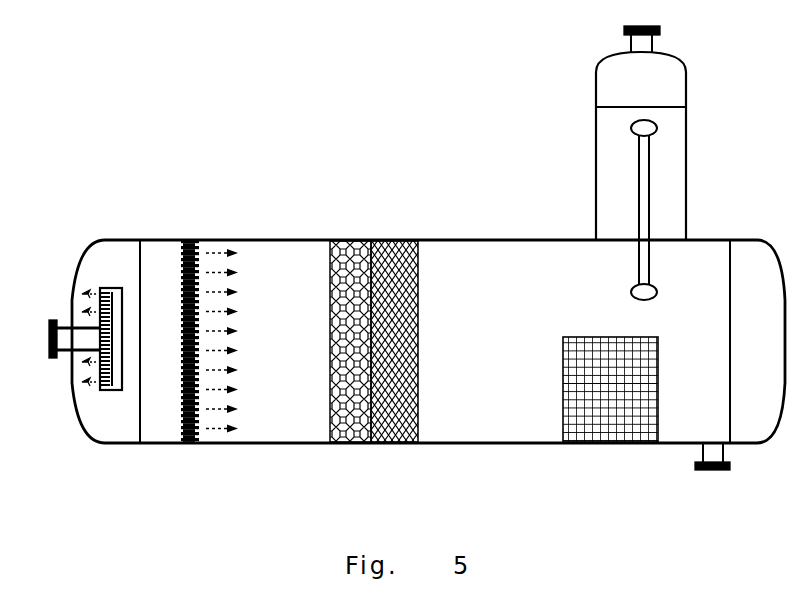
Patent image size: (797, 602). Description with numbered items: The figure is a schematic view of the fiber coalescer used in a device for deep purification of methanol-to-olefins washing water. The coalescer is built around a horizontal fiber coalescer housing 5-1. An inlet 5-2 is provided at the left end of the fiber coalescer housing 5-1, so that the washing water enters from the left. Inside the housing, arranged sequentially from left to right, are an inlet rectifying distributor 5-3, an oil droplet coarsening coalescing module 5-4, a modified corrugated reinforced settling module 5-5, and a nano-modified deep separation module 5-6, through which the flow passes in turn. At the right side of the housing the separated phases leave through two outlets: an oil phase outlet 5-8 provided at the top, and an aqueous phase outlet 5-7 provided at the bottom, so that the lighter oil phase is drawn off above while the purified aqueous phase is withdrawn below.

The fiber coalescer housing 5-1 is at (158, 238).
The inlet 5-2 is at (47, 346).
The inlet rectifying distributor 5-3 is at (206, 382).
The oil droplet coarsening coalescing module 5-4 is at (352, 278).
The modified corrugated reinforced settling module 5-5 is at (405, 270).
The nano-modified deep separation module 5-6 is at (612, 398).
The aqueous phase outlet 5-7 is at (728, 470).
The oil phase outlet 5-8 is at (660, 30).